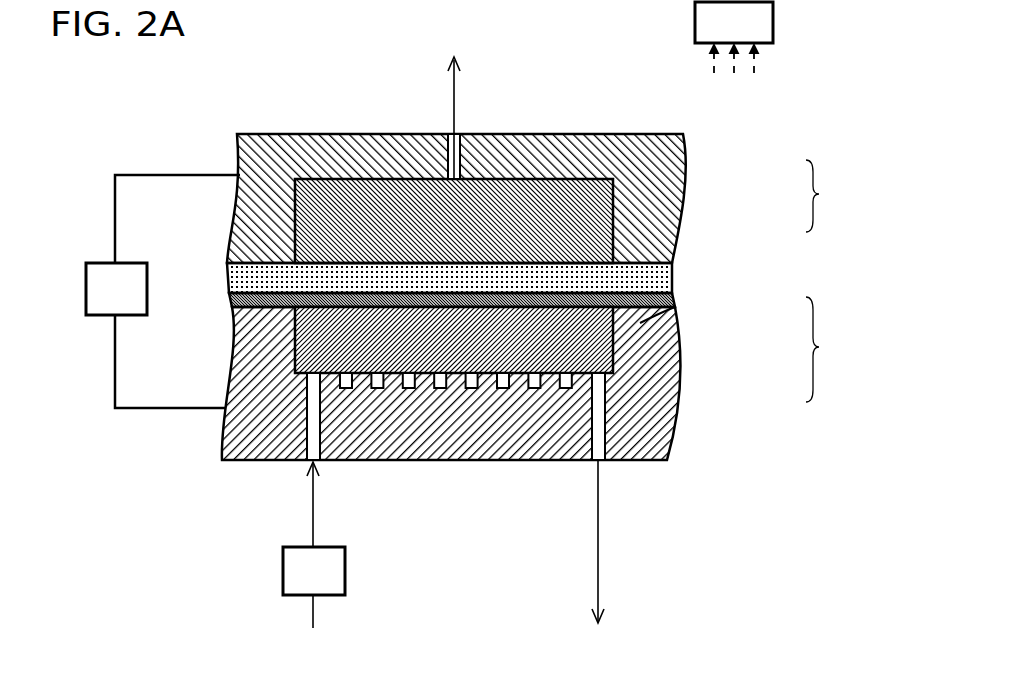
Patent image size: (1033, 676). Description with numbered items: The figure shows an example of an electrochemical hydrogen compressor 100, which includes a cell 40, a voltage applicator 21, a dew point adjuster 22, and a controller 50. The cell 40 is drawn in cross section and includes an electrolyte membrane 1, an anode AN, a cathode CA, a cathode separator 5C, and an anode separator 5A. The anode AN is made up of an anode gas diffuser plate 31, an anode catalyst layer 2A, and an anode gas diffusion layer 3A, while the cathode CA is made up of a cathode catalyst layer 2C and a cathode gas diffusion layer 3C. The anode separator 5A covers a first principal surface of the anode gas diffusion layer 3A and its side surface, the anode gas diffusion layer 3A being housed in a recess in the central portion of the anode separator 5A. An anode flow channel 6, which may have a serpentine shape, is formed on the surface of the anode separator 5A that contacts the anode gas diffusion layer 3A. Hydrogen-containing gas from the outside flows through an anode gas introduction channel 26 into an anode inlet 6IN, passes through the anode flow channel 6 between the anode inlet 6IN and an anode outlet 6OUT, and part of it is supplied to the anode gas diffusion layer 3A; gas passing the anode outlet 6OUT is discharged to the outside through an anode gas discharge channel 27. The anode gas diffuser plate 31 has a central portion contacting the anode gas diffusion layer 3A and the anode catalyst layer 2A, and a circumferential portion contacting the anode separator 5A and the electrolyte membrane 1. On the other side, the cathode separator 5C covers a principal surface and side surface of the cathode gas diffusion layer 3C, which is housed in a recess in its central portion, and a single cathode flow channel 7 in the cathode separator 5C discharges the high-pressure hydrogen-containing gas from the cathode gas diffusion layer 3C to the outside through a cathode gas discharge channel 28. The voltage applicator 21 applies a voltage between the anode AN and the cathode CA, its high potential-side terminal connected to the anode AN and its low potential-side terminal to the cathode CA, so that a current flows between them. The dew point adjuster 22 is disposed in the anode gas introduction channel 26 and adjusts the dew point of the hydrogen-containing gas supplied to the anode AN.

The electrochemical hydrogen compressor 100 is at (471, 29).
The cell 40 is at (273, 112).
The controller 50 is at (721, 35).
The cathode gas discharge channel 28 is at (452, 92).
The cathode flow channel 7 is at (460, 134).
The cathode separator 5C is at (518, 167).
The cathode gas diffusion layer 3C is at (613, 182).
The cathode catalyst layer 2C is at (583, 262).
The cathode CA is at (829, 196).
The electrolyte membrane 1 is at (672, 278).
The anode gas diffuser plate 31 is at (674, 299).
The anode catalyst layer 2A is at (615, 347).
The anode AN is at (830, 349).
The anode gas diffusion layer 3A is at (678, 356).
The anode separator 5A is at (437, 435).
The anode flow channel 6 is at (373, 390).
The anode inlet 6IN is at (315, 463).
The anode outlet 6OUT is at (600, 463).
The voltage applicator 21 is at (103, 301).
The dew point adjuster 22 is at (301, 584).
The anode gas introduction channel 26 is at (313, 608).
The anode gas discharge channel 27 is at (598, 608).